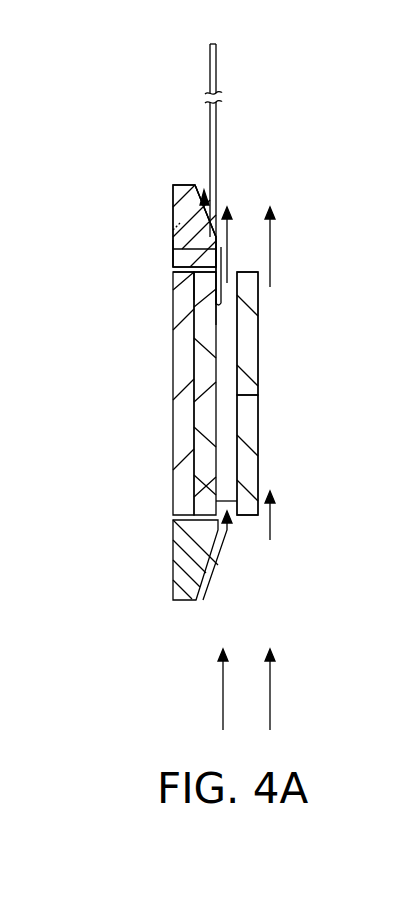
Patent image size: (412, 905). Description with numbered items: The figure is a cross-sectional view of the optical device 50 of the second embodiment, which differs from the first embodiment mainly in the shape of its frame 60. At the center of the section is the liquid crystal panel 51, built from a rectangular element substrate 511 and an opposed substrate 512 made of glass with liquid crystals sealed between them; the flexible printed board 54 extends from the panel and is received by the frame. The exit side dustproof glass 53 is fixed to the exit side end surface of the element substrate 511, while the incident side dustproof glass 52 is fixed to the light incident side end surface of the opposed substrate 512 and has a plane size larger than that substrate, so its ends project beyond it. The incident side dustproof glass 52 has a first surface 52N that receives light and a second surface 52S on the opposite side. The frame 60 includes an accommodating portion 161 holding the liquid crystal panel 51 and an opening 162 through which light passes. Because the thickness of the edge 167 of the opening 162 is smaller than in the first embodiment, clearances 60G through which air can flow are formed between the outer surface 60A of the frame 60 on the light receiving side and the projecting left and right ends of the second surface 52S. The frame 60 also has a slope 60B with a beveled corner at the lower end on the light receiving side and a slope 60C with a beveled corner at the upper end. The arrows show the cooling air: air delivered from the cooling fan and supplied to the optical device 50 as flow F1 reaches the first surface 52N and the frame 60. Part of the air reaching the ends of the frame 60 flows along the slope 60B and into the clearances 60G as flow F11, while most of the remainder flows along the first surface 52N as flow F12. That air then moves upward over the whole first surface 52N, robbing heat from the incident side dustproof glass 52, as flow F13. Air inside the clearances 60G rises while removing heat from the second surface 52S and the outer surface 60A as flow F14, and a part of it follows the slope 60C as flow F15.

The optical device 50 is at (134, 110).
The liquid crystal panel 51 is at (67, 408).
The element substrate 511 is at (203, 426).
The opposed substrate 512 is at (217, 452).
The incident side dustproof glass 52 is at (259, 433).
The first surface 52N is at (259, 366).
The second surface 52S is at (241, 407).
The exit side dustproof glass 53 is at (183, 403).
The flexible printed board 54 is at (216, 67).
The frame 60 is at (173, 229).
The outer surface 60A is at (222, 305).
The slope 60B is at (190, 604).
The slope 60C is at (195, 185).
The clearances 60G is at (237, 501).
The accommodating portion 161 is at (183, 288).
The opening 162 is at (222, 322).
The edge 167 is at (205, 300).
The flow F1 is at (223, 693).
The flow F11 is at (217, 585).
The flow F12 is at (271, 527).
The flow F13 is at (271, 244).
The flow F14 is at (232, 225).
The flow F15 is at (173, 253).